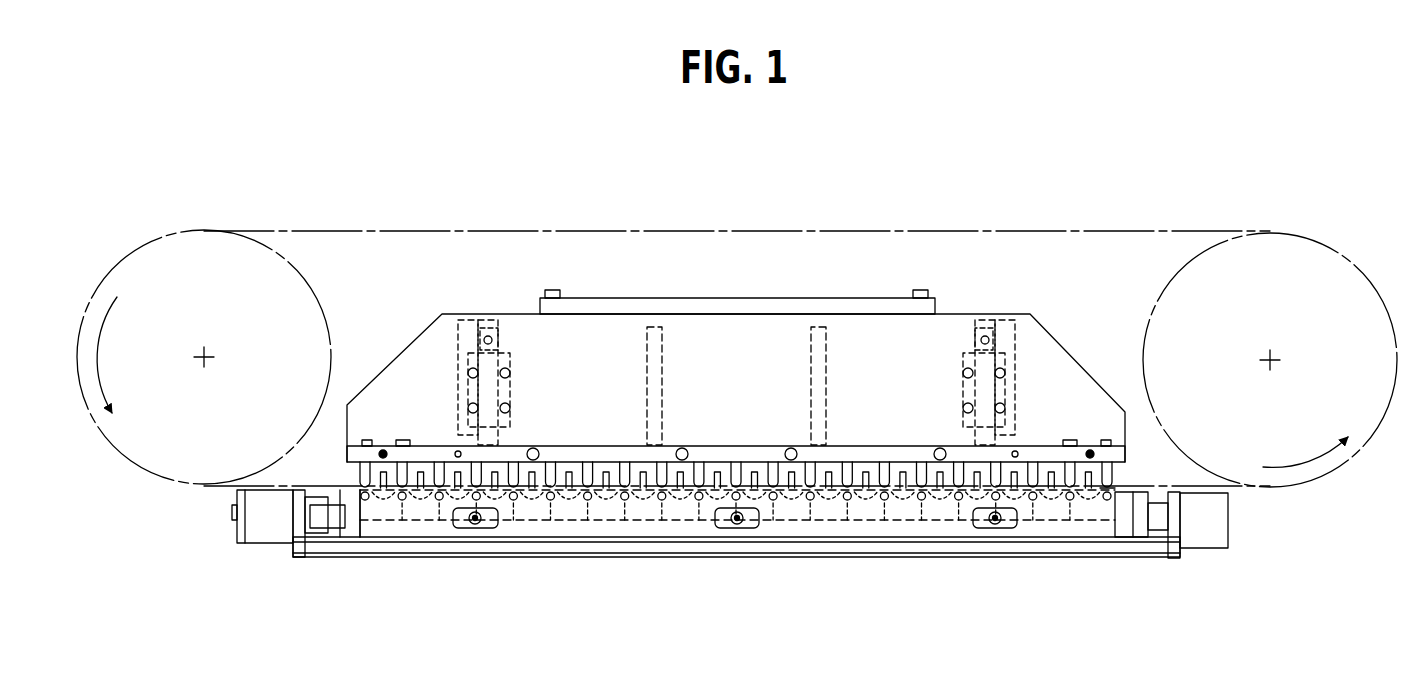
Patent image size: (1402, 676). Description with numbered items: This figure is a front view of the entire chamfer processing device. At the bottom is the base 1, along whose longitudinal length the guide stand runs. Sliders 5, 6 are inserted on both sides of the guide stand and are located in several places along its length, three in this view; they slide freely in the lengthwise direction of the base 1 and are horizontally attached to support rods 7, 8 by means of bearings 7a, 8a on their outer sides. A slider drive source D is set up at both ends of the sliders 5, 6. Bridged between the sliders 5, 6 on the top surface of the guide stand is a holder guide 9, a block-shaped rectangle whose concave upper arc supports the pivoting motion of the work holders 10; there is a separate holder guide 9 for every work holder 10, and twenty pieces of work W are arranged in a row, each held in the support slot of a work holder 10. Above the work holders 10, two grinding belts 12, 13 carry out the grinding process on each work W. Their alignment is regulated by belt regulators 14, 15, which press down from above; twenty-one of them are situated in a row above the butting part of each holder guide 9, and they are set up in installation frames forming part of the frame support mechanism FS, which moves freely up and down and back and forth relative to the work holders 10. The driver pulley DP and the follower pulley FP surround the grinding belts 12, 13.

The base 1 is at (427, 547).
The slider 5 is at (593, 527).
The slider 6 is at (737, 546).
The support rod 7 is at (473, 527).
The support rod 8 is at (759, 565).
The bearing 7a is at (482, 524).
The bearing 8a is at (735, 561).
The holder guide 9 is at (405, 503).
The work holder 10 is at (375, 503).
The grinding belt 12 is at (495, 232).
The grinding belt 13 is at (737, 338).
The belt regulator 14 is at (807, 467).
The belt regulator 15 is at (704, 380).
The follower pulley FP is at (147, 252).
The driver pulley DP is at (1295, 242).
The frame support mechanism FS is at (407, 345).
The work W is at (1088, 480).
The slider drive source D is at (255, 543).